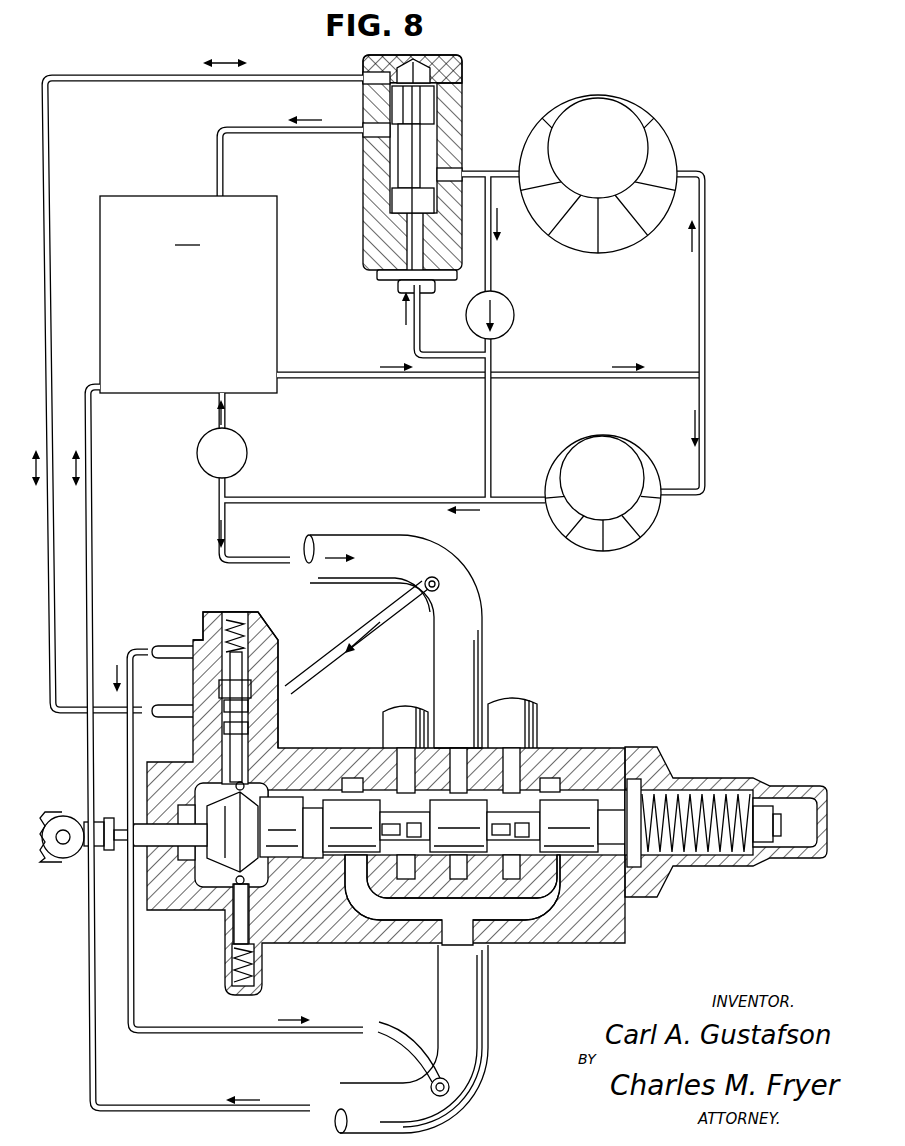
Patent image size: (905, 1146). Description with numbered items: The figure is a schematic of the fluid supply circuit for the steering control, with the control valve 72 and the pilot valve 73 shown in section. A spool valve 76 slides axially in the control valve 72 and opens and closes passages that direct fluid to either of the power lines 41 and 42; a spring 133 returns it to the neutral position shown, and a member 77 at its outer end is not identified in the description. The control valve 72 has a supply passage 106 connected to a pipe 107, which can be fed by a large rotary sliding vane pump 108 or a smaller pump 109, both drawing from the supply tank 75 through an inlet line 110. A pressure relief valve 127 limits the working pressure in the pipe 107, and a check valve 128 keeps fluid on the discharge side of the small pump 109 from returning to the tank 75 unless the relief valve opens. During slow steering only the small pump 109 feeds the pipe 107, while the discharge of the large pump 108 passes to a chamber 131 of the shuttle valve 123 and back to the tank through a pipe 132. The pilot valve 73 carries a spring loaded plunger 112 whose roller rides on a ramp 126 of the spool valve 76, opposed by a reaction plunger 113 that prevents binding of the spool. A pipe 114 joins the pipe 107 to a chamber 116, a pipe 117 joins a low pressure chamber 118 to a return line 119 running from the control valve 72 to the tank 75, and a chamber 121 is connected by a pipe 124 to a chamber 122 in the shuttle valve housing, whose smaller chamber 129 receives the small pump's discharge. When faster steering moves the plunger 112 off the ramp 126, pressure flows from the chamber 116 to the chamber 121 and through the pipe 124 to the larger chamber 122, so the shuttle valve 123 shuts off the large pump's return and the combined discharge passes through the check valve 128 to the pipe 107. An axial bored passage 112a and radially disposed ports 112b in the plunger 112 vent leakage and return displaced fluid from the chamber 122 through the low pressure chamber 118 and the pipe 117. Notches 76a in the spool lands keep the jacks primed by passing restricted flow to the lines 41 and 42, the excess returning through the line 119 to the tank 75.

The power line 41 is at (534, 722).
The power line 42 is at (384, 728).
The control valve 72 is at (566, 943).
The pilot valve 73 is at (206, 622).
The supply tank 75 is at (188, 294).
The spool valve 76 is at (165, 840).
The notches 76a is at (548, 776).
The operating lever 77 is at (48, 818).
The supply passage 106 is at (462, 760).
The pipe 107 is at (492, 285).
The large rotary sliding vane type pump 108 is at (594, 106).
The smaller rotary sliding vane type pump 109 is at (626, 536).
The inlet line 110 is at (704, 320).
The spring loaded plunger 112 is at (266, 660).
The axial bored passage 112a is at (272, 692).
The radially disposed ports 112b is at (266, 724).
The reaction plunger 113 is at (240, 922).
The pipe 114 is at (398, 598).
The chamber 116 is at (218, 688).
The pipe 117 is at (136, 1002).
The low pressure chamber 118 is at (236, 620).
The return line 119 is at (92, 548).
The chamber 121 is at (222, 726).
The chamber 122 is at (430, 76).
The shuttle valve 123 is at (405, 182).
The pipe 124 is at (46, 172).
The ramp 126 is at (256, 832).
The pressure relief valve 127 is at (244, 455).
The check valve 128 is at (500, 334).
The chamber 129 is at (405, 268).
The chamber 131 is at (400, 168).
The pipe 132 is at (244, 120).
The spring 133 is at (738, 768).